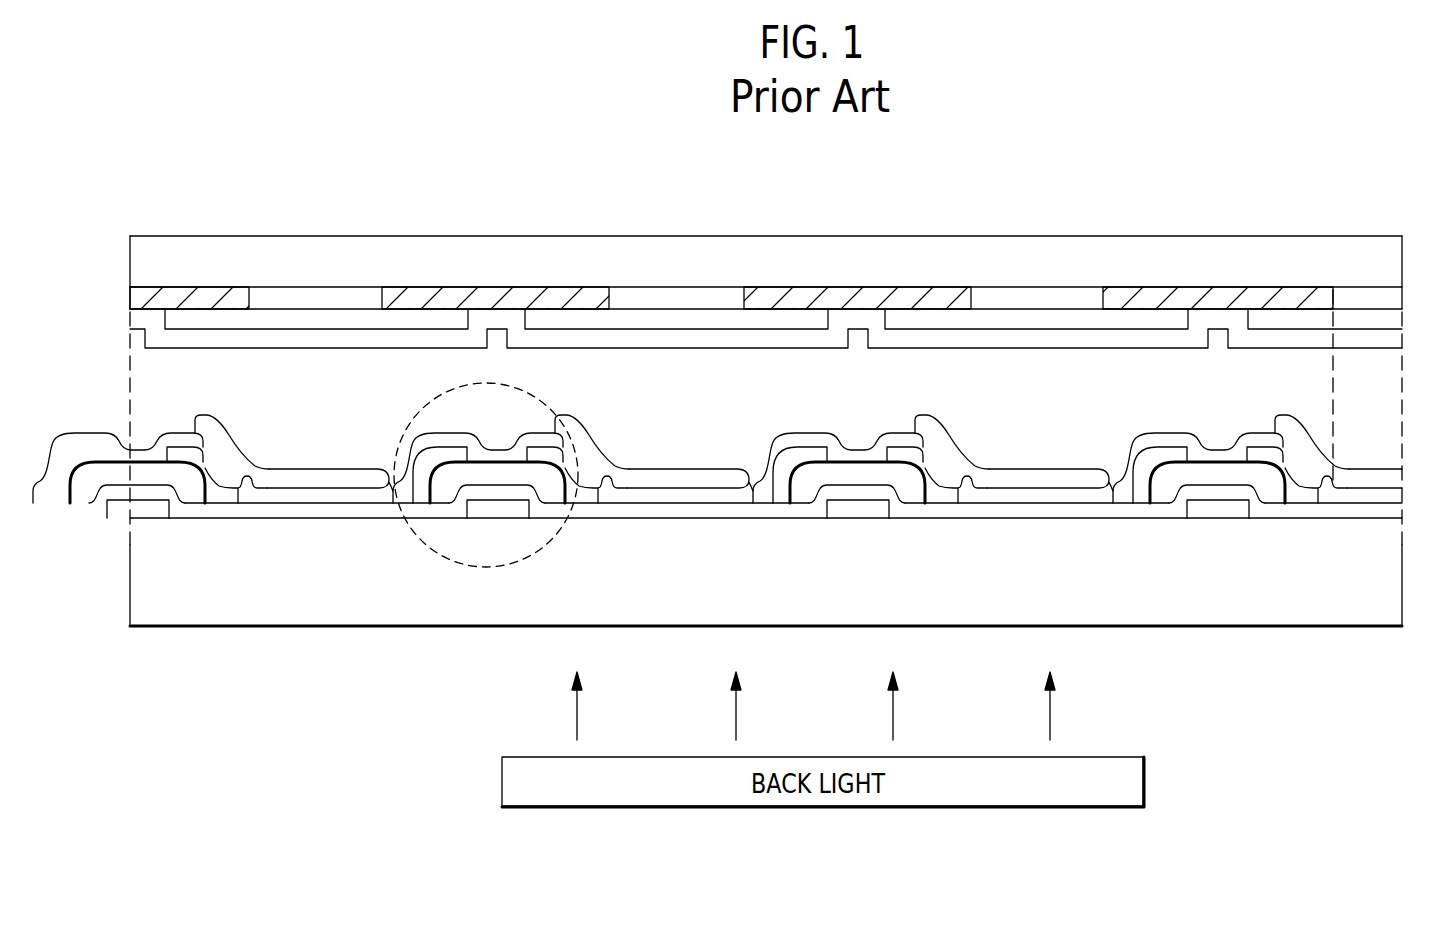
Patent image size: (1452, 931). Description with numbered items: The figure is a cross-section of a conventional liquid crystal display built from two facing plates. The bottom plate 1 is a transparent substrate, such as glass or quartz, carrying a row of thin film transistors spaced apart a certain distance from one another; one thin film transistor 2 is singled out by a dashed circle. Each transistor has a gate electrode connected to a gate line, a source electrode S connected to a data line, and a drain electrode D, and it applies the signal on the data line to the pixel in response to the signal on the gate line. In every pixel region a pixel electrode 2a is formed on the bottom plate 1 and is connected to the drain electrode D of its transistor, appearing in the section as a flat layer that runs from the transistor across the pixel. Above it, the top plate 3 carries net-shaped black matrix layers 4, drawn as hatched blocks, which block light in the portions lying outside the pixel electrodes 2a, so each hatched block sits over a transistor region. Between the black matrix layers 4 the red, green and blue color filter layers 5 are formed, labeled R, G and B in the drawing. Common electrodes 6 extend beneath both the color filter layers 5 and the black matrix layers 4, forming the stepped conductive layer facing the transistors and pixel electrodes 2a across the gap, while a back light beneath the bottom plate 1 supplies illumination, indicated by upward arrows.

The bottom plate 1 is at (1385, 584).
The thin film transistor 2 is at (537, 547).
The pixel electrode 2a is at (683, 482).
The top plate 3 is at (1385, 253).
The black matrix layer 4 is at (1258, 305).
The color filter layer 5 is at (1064, 305).
The common electrode 6 is at (1385, 338).
The source electrode S is at (448, 454).
The drain electrode D is at (542, 454).